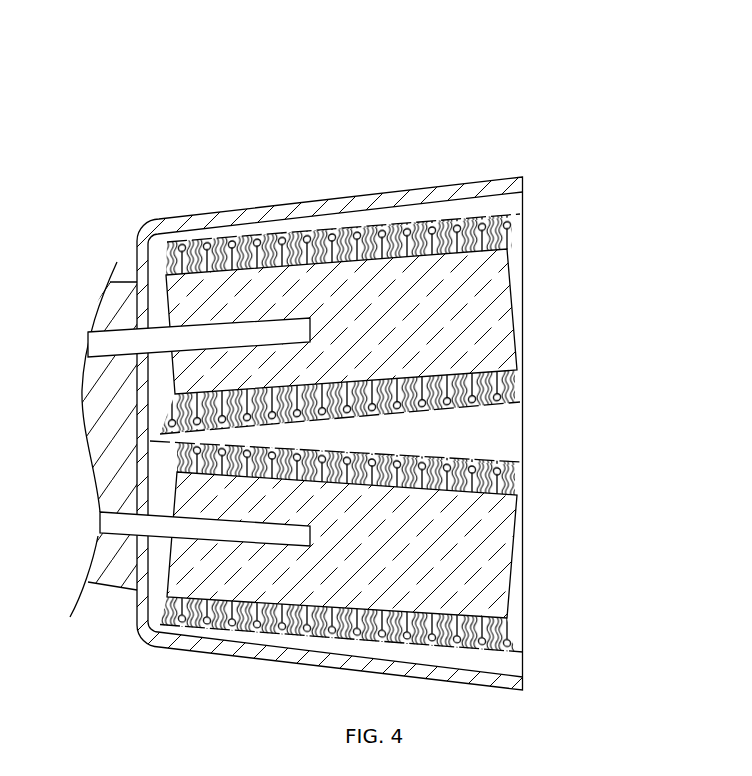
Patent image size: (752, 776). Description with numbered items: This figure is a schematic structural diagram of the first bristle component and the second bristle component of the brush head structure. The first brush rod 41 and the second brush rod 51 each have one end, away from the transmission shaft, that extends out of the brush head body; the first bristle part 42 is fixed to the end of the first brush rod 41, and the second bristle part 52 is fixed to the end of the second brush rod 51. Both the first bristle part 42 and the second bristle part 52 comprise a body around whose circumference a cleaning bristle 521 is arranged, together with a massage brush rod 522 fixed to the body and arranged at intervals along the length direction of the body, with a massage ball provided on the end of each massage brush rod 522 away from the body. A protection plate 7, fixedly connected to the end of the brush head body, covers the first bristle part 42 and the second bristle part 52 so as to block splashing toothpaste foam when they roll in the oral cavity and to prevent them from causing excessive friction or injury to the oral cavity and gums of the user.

The protection plate 7 is at (397, 192).
The first brush rod 41 is at (308, 530).
The first bristle part 42 is at (490, 562).
The second brush rod 51 is at (187, 340).
The second bristle part 52 is at (490, 297).
The cleaning bristle 521 is at (260, 242).
The massage brush rod 522 is at (333, 237).